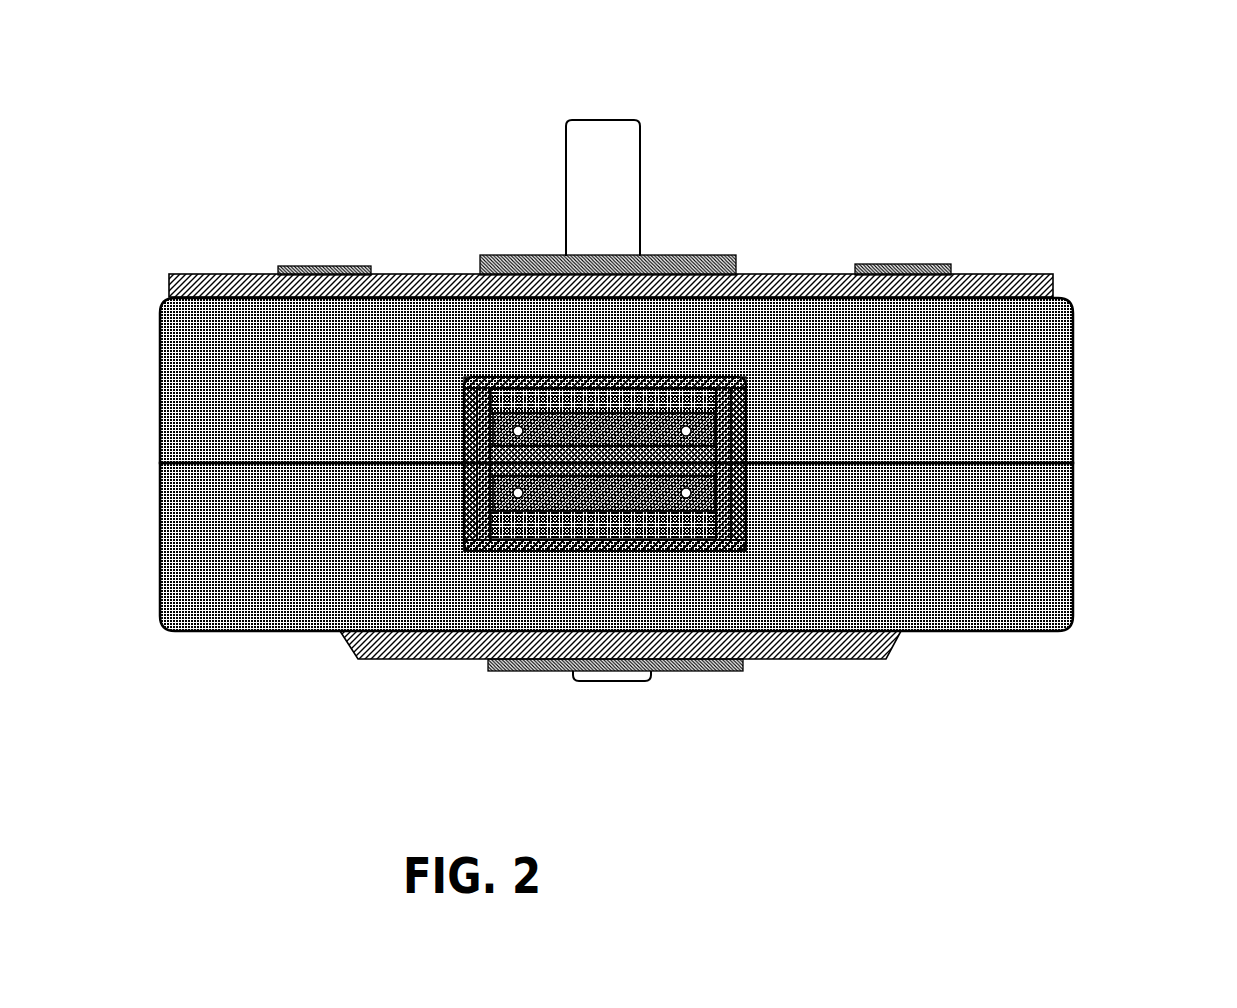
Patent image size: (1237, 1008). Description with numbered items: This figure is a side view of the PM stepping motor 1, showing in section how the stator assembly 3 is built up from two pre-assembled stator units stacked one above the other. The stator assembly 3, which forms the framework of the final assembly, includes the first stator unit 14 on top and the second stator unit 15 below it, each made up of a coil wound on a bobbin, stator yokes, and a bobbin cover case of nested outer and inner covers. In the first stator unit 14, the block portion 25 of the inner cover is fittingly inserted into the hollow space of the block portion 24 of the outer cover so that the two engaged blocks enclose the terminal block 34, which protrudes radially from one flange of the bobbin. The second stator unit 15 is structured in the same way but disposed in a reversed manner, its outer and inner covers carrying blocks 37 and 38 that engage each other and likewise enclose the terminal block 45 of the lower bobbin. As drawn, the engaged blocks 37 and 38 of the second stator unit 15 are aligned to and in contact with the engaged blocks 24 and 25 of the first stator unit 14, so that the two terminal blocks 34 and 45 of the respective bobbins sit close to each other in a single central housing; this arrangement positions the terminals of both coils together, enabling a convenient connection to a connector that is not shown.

The stepping motor 1 is at (1035, 100).
The stator assembly 3 is at (1162, 325).
The first stator unit 14 is at (1065, 362).
The second stator unit 15 is at (1068, 553).
The block portion of the outer cover 24 is at (698, 368).
The block portion of the inner cover 25 is at (738, 369).
The terminal block 34 is at (585, 405).
The block of the outer bobbin cover 37 is at (457, 542).
The block of the inner bobbin cover 38 is at (455, 500).
The terminal block 45 is at (517, 545).